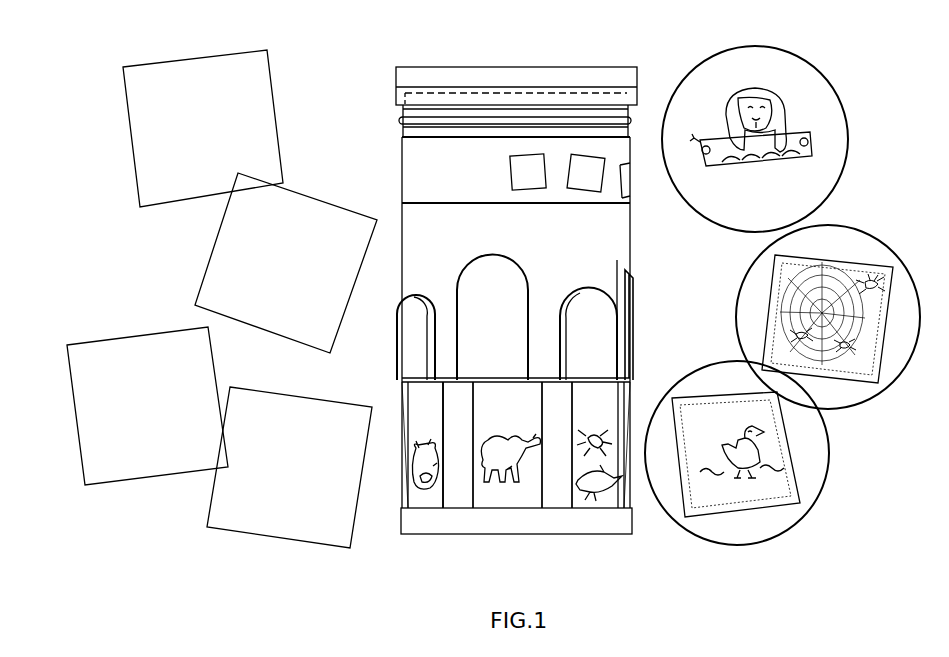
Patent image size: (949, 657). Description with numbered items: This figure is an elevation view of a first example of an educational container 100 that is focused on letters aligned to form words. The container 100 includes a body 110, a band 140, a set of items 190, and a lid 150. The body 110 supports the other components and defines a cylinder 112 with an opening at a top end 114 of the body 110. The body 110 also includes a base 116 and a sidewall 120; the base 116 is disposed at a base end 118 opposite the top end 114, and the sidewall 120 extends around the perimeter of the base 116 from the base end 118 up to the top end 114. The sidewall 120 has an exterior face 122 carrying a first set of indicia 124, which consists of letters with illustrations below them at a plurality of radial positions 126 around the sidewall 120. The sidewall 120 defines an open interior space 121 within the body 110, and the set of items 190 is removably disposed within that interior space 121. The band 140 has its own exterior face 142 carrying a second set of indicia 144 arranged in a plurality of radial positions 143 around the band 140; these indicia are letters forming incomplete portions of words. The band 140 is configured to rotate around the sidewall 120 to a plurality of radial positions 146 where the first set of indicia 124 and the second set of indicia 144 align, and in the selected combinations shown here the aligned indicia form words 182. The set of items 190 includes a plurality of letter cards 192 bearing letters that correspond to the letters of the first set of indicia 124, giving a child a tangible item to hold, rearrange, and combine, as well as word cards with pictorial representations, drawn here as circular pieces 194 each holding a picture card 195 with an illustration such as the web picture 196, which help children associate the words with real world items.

The educational container 100 is at (336, 24).
The body 110 is at (381, 142).
The cylinder 112 is at (389, 192).
The top end 114 is at (433, 92).
The base 116 is at (401, 520).
The base end 118 is at (457, 535).
The sidewall 120 is at (632, 385).
The open interior space 121 is at (632, 119).
The exterior face 122 is at (552, 500).
The first set of indicia 124 is at (401, 419).
The radial positions 126 is at (560, 458).
The band 140 is at (403, 229).
The exterior face 142 is at (420, 260).
The radial positions 143 is at (418, 292).
The second set of indicia 144 is at (607, 275).
The radial positions 146 is at (633, 305).
The lid 150 is at (630, 72).
The words 182 is at (562, 355).
The set of items 190 is at (98, 66).
The letter cards 192 is at (125, 141).
The circular disc pieces 194 is at (856, 400).
The picture card 195 is at (870, 378).
The web picture 196 is at (784, 326).